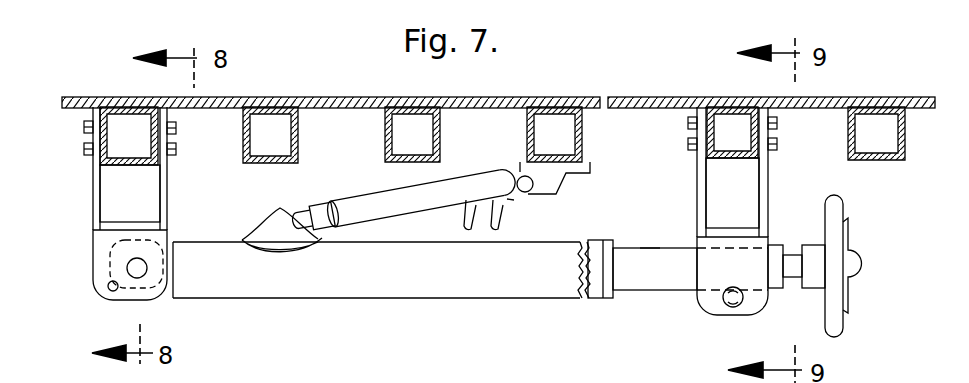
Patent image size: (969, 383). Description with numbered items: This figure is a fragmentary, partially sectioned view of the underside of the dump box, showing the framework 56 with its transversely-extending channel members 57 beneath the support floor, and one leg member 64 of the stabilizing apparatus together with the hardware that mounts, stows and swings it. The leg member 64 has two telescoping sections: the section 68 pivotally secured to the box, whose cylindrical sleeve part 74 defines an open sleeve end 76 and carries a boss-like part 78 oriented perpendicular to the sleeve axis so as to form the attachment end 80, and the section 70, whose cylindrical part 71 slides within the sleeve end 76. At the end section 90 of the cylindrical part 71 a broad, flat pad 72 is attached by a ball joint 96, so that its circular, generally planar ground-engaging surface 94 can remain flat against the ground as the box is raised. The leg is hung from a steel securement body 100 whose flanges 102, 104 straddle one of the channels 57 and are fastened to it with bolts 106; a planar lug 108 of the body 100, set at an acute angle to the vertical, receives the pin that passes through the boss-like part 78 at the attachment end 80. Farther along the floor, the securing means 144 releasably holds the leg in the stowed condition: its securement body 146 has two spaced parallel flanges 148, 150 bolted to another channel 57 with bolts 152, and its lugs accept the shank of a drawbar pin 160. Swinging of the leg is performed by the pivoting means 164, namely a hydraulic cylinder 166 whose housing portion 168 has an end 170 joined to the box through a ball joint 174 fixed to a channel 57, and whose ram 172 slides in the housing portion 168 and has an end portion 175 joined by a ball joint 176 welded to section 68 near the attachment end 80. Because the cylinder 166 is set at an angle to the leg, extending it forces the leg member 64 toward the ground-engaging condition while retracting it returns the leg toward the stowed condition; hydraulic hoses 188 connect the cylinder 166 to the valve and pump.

The framework 56 is at (662, 108).
The channel member 57 is at (243, 123).
The leg member 64 is at (440, 310).
The section 68 is at (340, 300).
The section 70 is at (643, 290).
The cylindrical part 71 is at (651, 247).
The pad 72 is at (843, 198).
The cylindrical sleeve part 74 is at (376, 291).
The sleeve end 76 is at (618, 298).
The boss-like part 78 is at (110, 241).
The attachment end 80 is at (124, 258).
The end section 90 is at (777, 245).
The ground-engaging surface 94 is at (849, 252).
The ball joint 96 is at (797, 288).
The securement body 100 is at (95, 273).
The flange 102 is at (93, 183).
The flange 104 is at (167, 182).
The bolts 106 is at (84, 127).
The lug 108 is at (118, 300).
The securing means 144 is at (719, 325).
The securement body 146 is at (697, 170).
The flange 148 is at (706, 198).
The flange 150 is at (768, 175).
The bolts 152 is at (688, 123).
The drawbar pin 160 is at (740, 306).
The pivoting means 164 is at (527, 210).
The hydraulic cylinder 166 is at (353, 190).
The housing portion 168 is at (425, 206).
The end 170 is at (510, 177).
The ram 172 is at (340, 207).
The ball joint 174 is at (533, 193).
The end portion 175 is at (314, 180).
The ball joint 176 is at (280, 210).
The hydraulic hoses 188 is at (481, 213).